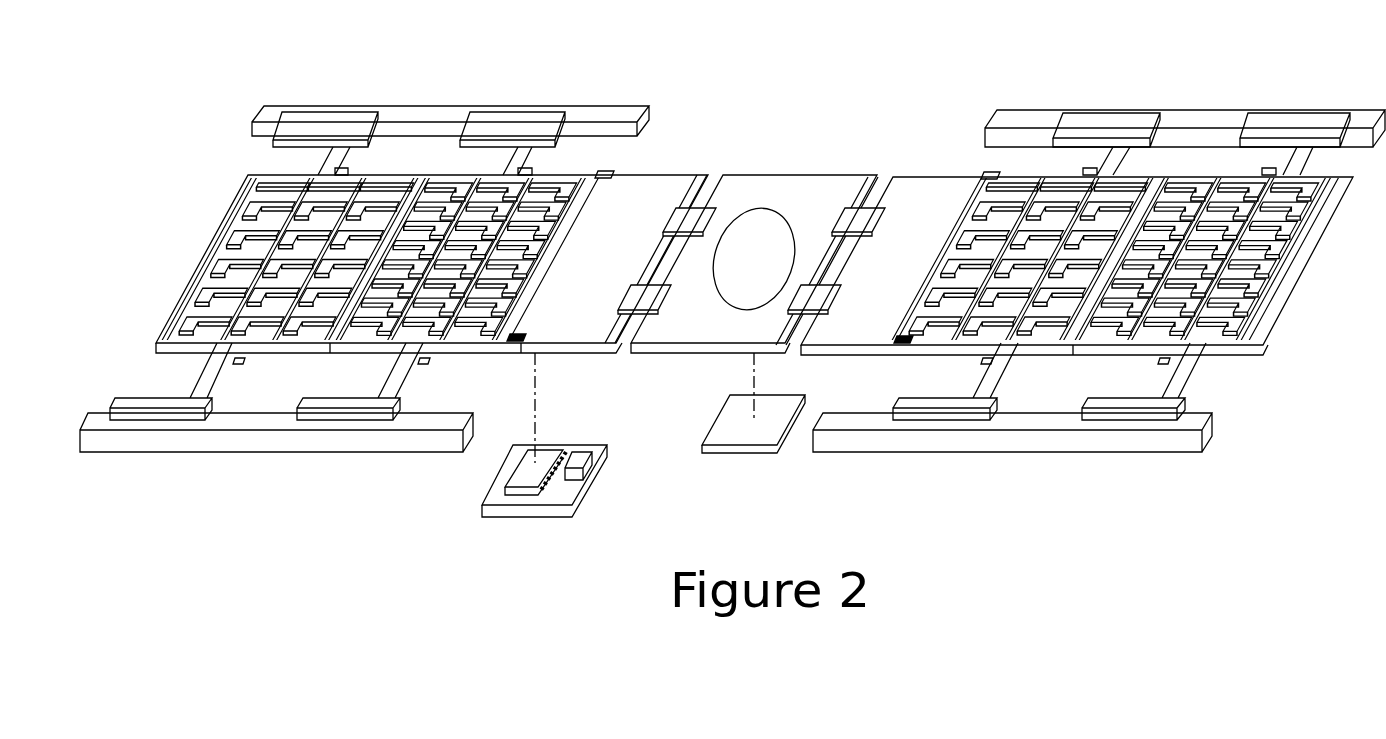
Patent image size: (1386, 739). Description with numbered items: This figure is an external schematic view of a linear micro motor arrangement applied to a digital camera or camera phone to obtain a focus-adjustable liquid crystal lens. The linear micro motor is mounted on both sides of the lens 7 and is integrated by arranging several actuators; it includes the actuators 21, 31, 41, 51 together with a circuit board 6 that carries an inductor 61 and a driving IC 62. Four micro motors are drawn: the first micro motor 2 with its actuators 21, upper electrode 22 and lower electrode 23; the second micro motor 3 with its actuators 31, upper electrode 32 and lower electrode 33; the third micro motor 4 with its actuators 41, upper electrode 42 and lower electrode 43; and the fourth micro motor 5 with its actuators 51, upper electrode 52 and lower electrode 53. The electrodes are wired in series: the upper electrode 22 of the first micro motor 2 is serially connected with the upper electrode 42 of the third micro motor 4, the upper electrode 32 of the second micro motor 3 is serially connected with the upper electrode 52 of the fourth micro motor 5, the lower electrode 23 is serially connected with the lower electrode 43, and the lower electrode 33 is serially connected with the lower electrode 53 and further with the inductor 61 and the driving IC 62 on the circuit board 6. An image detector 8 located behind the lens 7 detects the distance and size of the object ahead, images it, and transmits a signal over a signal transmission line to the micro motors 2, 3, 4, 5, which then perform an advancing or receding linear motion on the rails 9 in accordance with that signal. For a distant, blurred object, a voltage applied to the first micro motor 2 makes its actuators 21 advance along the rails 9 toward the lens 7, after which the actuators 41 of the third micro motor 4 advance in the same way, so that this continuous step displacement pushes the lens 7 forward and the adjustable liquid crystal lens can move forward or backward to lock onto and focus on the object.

The first micro motor 2 is at (508, 235).
The actuators 21 is at (600, 180).
The upper electrode 22 is at (530, 170).
The lower electrode 23 is at (430, 365).
The second micro motor 3 is at (314, 234).
The actuators 31 is at (268, 205).
The upper electrode 32 is at (342, 168).
The lower electrode 33 is at (240, 365).
The third micro motor 4 is at (1022, 217).
The actuators 41 is at (1018, 207).
The upper electrode 42 is at (1088, 168).
The lower electrode 43 is at (983, 362).
The fourth micro motor 5 is at (1204, 223).
The actuators 51 is at (1237, 207).
The upper electrode 52 is at (1268, 168).
The lower electrode 53 is at (1160, 364).
The circuit board 6 is at (550, 456).
The inductor 61 is at (585, 457).
The driving IC 62 is at (545, 460).
The lens 7 is at (755, 248).
The image detector 8 is at (730, 427).
The rails 9 is at (273, 117).